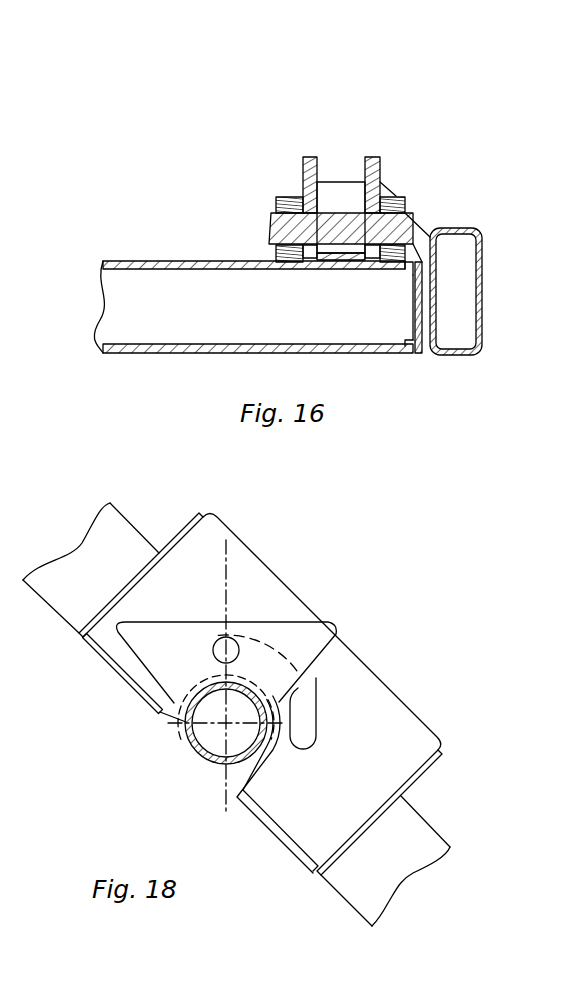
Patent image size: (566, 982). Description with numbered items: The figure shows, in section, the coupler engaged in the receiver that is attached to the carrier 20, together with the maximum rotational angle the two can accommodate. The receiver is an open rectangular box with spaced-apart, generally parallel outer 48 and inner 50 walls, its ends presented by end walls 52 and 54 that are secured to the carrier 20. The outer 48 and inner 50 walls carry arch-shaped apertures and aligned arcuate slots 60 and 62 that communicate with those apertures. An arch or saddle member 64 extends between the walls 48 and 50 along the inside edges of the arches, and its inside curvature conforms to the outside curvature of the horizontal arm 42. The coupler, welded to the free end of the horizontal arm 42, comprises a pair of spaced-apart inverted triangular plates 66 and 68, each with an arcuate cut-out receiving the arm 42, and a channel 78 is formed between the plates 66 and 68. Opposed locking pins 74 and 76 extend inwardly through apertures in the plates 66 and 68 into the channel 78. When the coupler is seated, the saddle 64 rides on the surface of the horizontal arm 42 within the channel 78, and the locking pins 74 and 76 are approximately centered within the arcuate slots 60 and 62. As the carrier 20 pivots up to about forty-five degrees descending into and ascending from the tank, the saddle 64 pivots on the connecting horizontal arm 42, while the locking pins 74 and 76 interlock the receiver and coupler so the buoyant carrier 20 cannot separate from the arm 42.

In FIG. 16, the carrier 20 is at (483, 268).
In FIG. 18, the carrier 20 is at (430, 823).
In FIG. 16, the horizontal arm 42 is at (205, 262).
In FIG. 18, the horizontal arm 42 is at (186, 743).
In FIG. 16, the outer wall 48 is at (310, 157).
In FIG. 18, the outer wall 48 is at (381, 679).
In FIG. 16, the inner wall 50 is at (372, 157).
In FIG. 18, the end wall 52 is at (438, 750).
In FIG. 16, the end wall 54 is at (432, 235).
In FIG. 18, the end wall 54 is at (190, 521).
In FIG. 16, the arcuate slot 60 is at (305, 270).
In FIG. 18, the arcuate slot 60 is at (318, 700).
In FIG. 16, the arcuate slot 62 is at (370, 270).
In FIG. 16, the saddle member 64 is at (335, 250).
In FIG. 18, the saddle member 64 is at (227, 785).
In FIG. 16, the coupler plate 66 is at (297, 197).
In FIG. 18, the coupler plate 66 is at (297, 620).
In FIG. 16, the coupler plate 68 is at (398, 195).
In FIG. 16, the locking pin 74 is at (268, 213).
In FIG. 18, the locking pin 74 is at (224, 636).
In FIG. 16, the locking pin 76 is at (410, 212).
In FIG. 16, the channel 78 is at (342, 152).